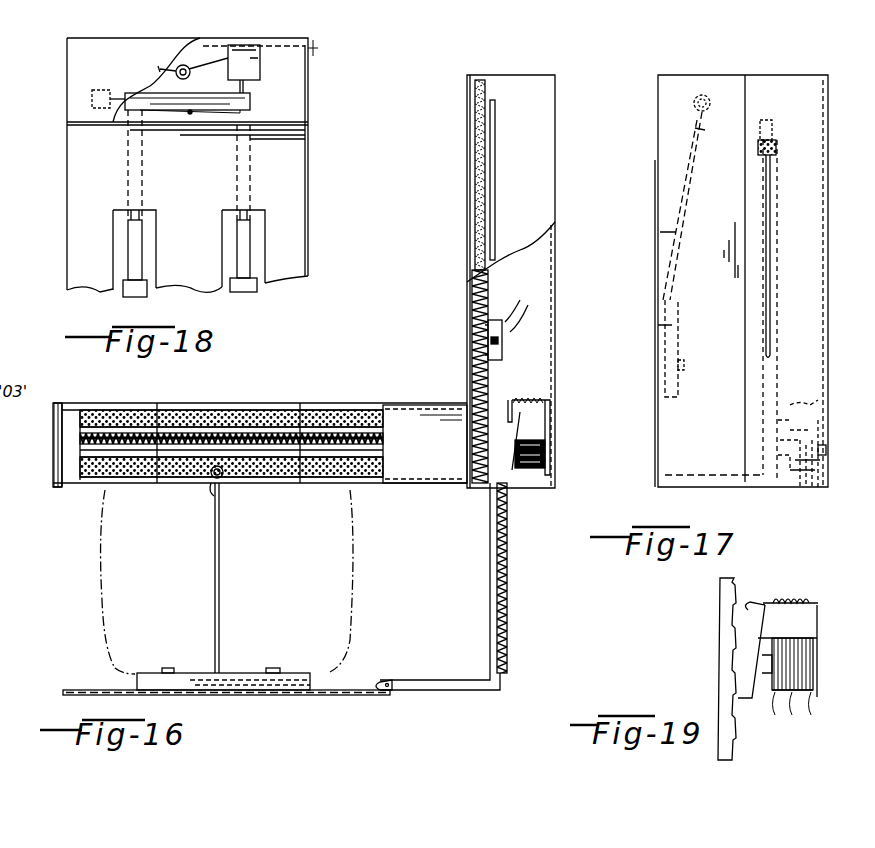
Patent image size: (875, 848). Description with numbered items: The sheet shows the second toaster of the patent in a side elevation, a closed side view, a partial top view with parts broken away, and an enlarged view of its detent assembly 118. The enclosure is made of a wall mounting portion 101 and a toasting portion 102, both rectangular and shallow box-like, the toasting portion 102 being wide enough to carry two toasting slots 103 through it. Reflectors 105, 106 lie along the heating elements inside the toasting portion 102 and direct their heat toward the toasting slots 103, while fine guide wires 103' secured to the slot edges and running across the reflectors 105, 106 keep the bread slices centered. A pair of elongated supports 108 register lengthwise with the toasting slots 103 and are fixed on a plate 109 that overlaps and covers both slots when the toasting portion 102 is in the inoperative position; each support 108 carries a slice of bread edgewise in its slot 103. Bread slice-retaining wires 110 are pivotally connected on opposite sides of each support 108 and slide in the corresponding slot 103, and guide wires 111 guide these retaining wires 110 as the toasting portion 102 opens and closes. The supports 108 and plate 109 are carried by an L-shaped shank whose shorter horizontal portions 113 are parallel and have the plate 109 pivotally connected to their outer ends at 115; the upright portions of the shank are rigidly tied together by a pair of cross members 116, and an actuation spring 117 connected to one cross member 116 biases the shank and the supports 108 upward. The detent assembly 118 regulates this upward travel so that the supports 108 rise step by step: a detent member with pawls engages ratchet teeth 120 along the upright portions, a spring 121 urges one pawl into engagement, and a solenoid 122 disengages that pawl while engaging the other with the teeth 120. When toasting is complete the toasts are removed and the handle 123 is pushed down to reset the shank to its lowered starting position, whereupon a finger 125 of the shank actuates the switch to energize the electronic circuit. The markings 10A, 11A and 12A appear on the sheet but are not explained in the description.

In FIG. 18, the wall mounting portion 101 is at (309, 91).
In FIG. 16, the wall mounting portion 101 is at (540, 108).
In FIG. 18, the toasting portion 102 is at (292, 180).
In FIG. 16, the toasting portion 102 is at (415, 405).
In FIG. 17, the toasting portion 102 is at (672, 420).
In FIG. 18, the toasting slots 103 is at (238, 250).
In FIG. 16, the toasting slots 103 is at (317, 424).
In FIG. 16, the fine guide wires 103' is at (223, 429).
In FIG. 16, the reflector 105 is at (147, 470).
In FIG. 16, the reflector 106 is at (143, 425).
In FIG. 16, the end cap 10A is at (115, 432).
In FIG. 18, the elongated supports 108 is at (130, 292).
In FIG. 16, the elongated supports 108 is at (185, 680).
In FIG. 17, the elongated supports 108 is at (660, 324).
In FIG. 16, the plate 109 is at (88, 690).
In FIG. 17, the plate 109 is at (660, 382).
In FIG. 16, the bread slice-retaining wires 110 is at (220, 611).
In FIG. 17, the bread slice-retaining wires 110 is at (700, 130).
In FIG. 16, the guide wires 111 is at (222, 488).
In FIG. 18, the shorter horizontal portions 113 is at (128, 188).
In FIG. 16, the shorter horizontal portions 113 is at (447, 691).
In FIG. 16, the rack 11A is at (490, 566).
In FIG. 17, the rack 11A is at (775, 275).
In FIG. 19, the rack 11A is at (720, 668).
In FIG. 16, the pivotal connection 115 is at (390, 680).
In FIG. 18, the cross members 116 is at (180, 110).
In FIG. 16, the actuation spring 117 is at (468, 288).
In FIG. 17, the detent assembly 118 is at (802, 443).
In FIG. 19, the detent assembly 118 is at (799, 573).
In FIG. 19, the ratchet teeth 120 is at (740, 652).
In FIG. 19, the spring 121 is at (800, 603).
In FIG. 19, the solenoid 122 is at (796, 676).
In FIG. 17, the handle 123 is at (775, 150).
In FIG. 18, the finger 125 is at (112, 92).
In FIG. 18, the switch lead 12A is at (90, 104).